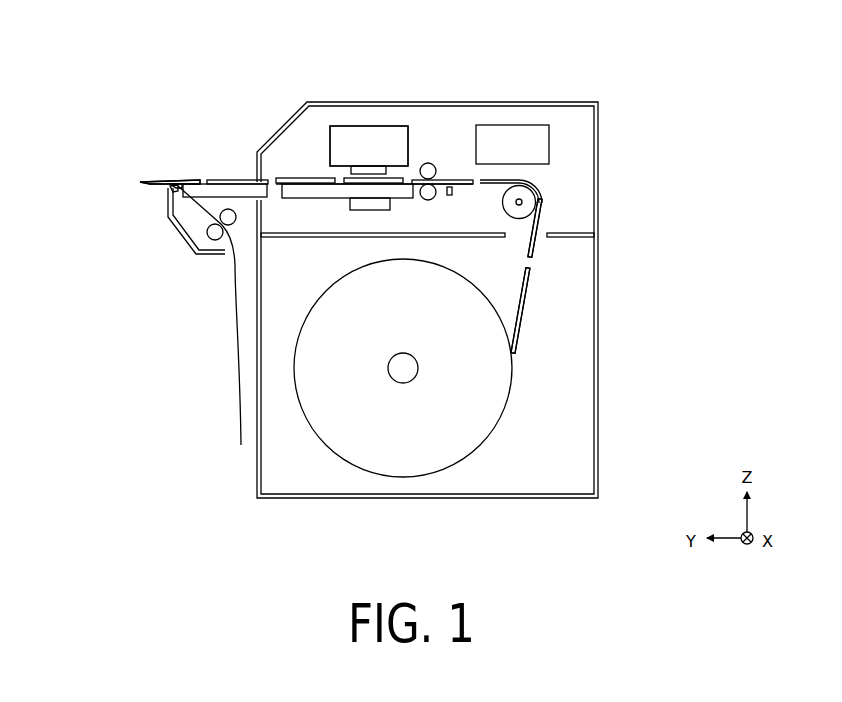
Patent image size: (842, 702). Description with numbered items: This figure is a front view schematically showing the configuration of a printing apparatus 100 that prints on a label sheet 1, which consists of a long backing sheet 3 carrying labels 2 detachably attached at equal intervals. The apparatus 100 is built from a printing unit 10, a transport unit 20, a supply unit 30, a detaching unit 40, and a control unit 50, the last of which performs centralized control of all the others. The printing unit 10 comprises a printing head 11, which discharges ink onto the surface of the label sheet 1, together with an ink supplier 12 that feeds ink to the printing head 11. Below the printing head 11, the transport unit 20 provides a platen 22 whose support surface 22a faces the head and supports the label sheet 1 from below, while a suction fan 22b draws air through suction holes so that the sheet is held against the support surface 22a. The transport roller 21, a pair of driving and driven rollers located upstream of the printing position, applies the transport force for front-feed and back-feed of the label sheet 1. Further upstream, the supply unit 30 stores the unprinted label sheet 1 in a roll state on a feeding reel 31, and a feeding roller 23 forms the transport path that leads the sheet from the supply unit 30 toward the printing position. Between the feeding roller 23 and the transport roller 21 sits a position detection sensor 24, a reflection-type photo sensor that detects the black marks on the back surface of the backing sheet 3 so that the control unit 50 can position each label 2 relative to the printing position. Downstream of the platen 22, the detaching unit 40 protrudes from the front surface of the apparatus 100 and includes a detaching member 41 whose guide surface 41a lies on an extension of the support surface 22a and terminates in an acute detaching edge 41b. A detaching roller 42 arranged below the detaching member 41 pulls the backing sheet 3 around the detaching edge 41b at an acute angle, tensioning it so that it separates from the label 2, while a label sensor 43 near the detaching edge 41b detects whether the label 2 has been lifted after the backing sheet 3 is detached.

The printing apparatus 100 is at (210, 76).
The printing unit 10 is at (392, 90).
The printing head 11 is at (368, 167).
The ink supplier 12 is at (376, 135).
The control unit 50 is at (528, 132).
The transport unit 20 is at (620, 181).
The transport roller 21 is at (434, 158).
The platen 22 is at (333, 199).
The support surface 22a is at (338, 181).
The suction fan 22b is at (388, 205).
The feeding roller 23 is at (541, 193).
The position detection sensor 24 is at (449, 196).
The supply unit 30 is at (515, 418).
The feeding reel 31 is at (470, 435).
The label sheet 1 is at (636, 288).
The label 2 is at (147, 181).
The backing sheet 3 is at (232, 273).
The detaching unit 40 is at (108, 232).
The detaching member 41 is at (227, 185).
The guide surface 41a is at (203, 180).
The detaching edge 41b is at (178, 182).
The detaching roller 42 is at (200, 221).
The label sensor 43 is at (168, 190).